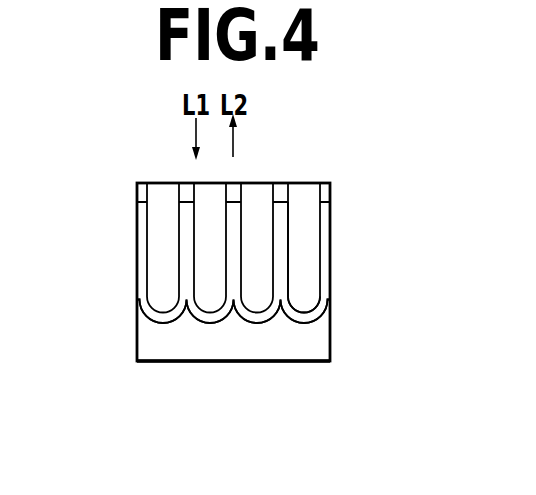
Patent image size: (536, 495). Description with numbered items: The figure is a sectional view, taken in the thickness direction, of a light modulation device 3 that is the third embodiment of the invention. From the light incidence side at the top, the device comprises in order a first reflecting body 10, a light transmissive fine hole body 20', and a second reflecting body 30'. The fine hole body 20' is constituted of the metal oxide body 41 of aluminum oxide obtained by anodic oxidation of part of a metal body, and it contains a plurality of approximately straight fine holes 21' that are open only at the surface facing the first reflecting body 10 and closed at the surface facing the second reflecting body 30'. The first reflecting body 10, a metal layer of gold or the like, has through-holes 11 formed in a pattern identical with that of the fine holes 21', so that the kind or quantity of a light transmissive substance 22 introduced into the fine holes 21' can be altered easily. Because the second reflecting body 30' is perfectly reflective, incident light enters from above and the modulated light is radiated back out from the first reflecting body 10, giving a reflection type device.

The light modulation device 3 is at (357, 156).
The first reflecting body 10 is at (333, 190).
The through-holes 11 is at (150, 191).
The light transmissive substance 22 is at (153, 258).
The fine holes 21' is at (309, 304).
The light transmissive fine hole body 20' is at (297, 278).
The metal oxide body 41 is at (233, 312).
The second reflecting body 30' is at (297, 338).